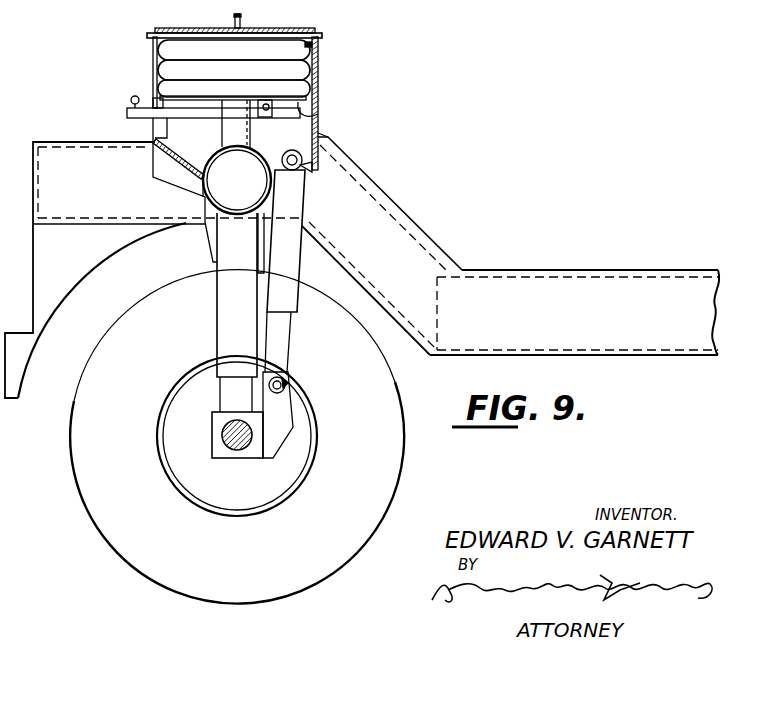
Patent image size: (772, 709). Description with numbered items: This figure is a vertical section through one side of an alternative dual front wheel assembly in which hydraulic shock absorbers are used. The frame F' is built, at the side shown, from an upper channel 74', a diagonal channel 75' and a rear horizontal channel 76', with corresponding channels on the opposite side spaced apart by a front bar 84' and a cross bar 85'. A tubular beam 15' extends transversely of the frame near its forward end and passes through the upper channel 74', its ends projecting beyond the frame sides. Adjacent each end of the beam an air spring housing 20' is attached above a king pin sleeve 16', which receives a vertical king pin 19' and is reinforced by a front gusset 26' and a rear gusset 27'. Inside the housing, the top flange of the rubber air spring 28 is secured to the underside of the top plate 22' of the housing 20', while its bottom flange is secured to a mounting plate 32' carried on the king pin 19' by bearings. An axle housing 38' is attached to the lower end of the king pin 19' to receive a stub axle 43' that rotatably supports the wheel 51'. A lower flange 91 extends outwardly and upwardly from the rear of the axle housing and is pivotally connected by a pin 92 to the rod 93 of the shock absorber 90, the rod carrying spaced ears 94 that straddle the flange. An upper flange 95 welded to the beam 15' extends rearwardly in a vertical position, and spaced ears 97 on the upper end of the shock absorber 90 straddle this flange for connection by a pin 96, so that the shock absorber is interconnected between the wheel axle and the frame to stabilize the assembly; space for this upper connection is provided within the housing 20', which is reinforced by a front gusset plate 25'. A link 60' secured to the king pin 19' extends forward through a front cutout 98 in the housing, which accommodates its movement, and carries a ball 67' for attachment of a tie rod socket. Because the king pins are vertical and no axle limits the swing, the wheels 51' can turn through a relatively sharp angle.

The top plate 22' is at (239, 22).
The rubber air spring 28 is at (318, 46).
The air spring housing 20' is at (254, 103).
The mounting plate 32' is at (325, 112).
The upper flange 95 is at (318, 133).
The spaced ears 97 is at (297, 153).
The pin 96 is at (312, 170).
The hydraulic shock absorber 90 is at (299, 206).
The frame F' is at (412, 190).
The diagonal channel 75' is at (391, 246).
The rear horizontal channel 76' is at (574, 298).
The cross bar 85' is at (577, 313).
The upper channel 74' is at (105, 250).
The ball 67' is at (113, 92).
The link 60' is at (194, 119).
The front cutout 98 is at (152, 134).
The front bar 84' is at (169, 182).
The tubular beam 15' is at (223, 172).
The front gusset plate 25' is at (166, 171).
The king pin 19' is at (226, 258).
The front gusset 26' is at (184, 242).
The king pin sleeve 16' is at (201, 295).
The rear gusset 27' is at (241, 257).
The rod 93 is at (289, 347).
The spaced ears 94 is at (284, 380).
The pin 92 is at (289, 387).
The lower flange 91 is at (287, 416).
The stub axle 43' is at (210, 437).
The axle housing 38' is at (237, 449).
The wheel 51' is at (237, 437).